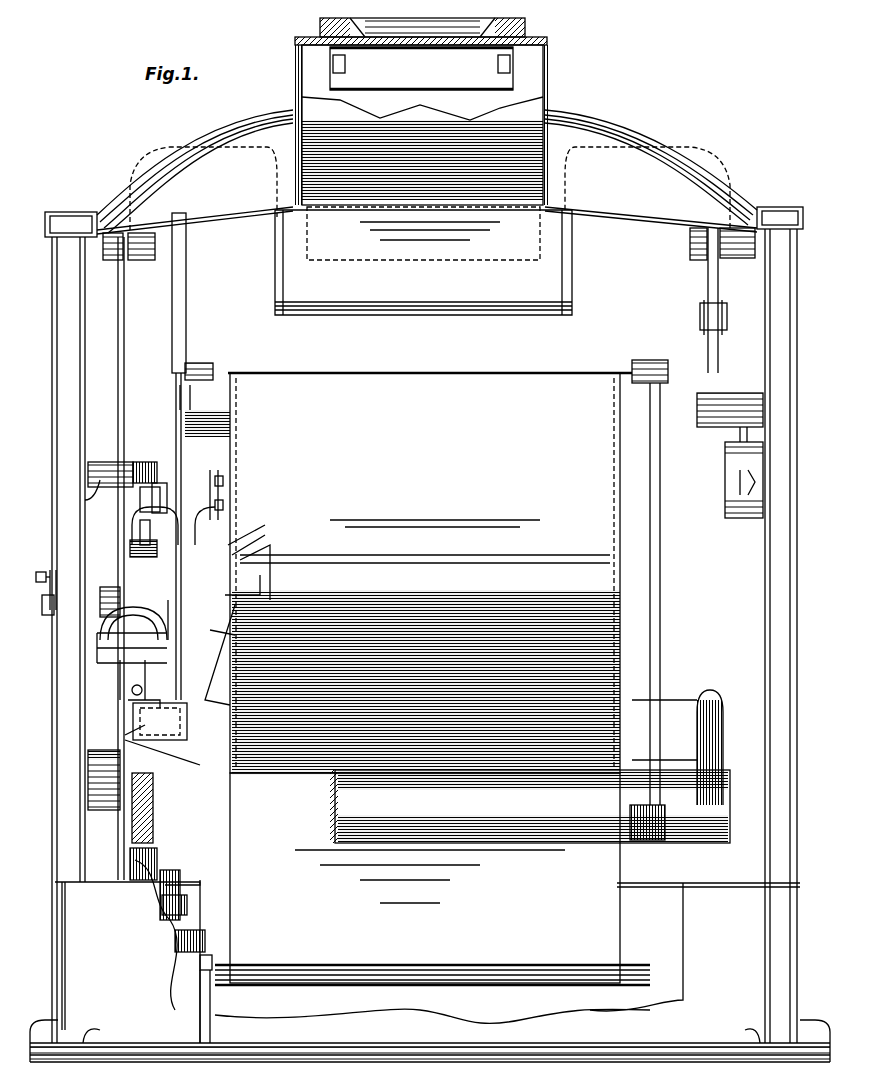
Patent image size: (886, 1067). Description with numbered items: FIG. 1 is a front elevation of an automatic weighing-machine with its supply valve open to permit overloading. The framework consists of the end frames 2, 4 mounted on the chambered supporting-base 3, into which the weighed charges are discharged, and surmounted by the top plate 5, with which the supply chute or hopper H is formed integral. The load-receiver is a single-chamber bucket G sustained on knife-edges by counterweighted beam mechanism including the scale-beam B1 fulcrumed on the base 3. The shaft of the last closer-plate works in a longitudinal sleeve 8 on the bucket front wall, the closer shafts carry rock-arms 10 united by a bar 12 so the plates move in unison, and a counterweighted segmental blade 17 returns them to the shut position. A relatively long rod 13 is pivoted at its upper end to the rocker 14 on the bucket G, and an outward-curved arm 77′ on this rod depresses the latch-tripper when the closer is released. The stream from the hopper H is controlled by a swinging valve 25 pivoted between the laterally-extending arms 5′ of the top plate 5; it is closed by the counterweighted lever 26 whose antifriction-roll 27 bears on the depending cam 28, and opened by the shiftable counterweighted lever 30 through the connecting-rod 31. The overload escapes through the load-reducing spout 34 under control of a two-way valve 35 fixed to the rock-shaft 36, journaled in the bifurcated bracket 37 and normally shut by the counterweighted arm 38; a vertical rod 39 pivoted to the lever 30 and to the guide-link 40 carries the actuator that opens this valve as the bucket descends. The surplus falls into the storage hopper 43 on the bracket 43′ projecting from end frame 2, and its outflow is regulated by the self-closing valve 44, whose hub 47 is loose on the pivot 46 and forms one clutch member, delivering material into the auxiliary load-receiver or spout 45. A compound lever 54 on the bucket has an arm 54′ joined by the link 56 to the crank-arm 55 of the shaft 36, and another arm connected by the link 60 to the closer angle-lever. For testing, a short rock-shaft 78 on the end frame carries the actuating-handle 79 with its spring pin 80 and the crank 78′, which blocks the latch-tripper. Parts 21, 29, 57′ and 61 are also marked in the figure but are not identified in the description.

The end frame 2 is at (108, 360).
The chambered supporting-base 3 is at (430, 972).
The end frame 4 is at (775, 350).
The top plate 5 is at (427, 172).
The laterally-extending arms 5′ is at (135, 245).
The longitudinal sleeve 8 is at (432, 898).
The rock-arms 10 is at (205, 962).
The bar 12 is at (185, 942).
The connecting-rod 13 is at (205, 395).
The rocker 14 is at (178, 398).
The counterweighted segmental blade 17 is at (202, 998).
The motor brush holder 21 is at (468, 88).
The valve 25 is at (383, 308).
The counterweighted lever 26 is at (720, 400).
The antifriction-roll 27 is at (703, 306).
The depending cam 28 is at (708, 270).
The rod 29 is at (186, 300).
The shiftable counterweighted lever 30 is at (100, 772).
The connecting-rod 31 is at (124, 318).
The load-reducing spout 34 is at (260, 566).
The two-way valve 35 is at (235, 585).
The rock-shaft 36 is at (130, 548).
The bifurcated bracket 37 is at (215, 495).
The counterweighted arm 38 is at (140, 530).
The vertically-disposed rod 39 is at (165, 495).
The guide-link 40 is at (135, 470).
The storage hopper 43 is at (205, 655).
The bracket 43′ is at (110, 628).
The auxiliary load-supply valve 44 is at (185, 722).
The auxiliary load-receiver 45 is at (195, 757).
The pivot 46 is at (97, 650).
The hub 47 is at (130, 670).
The compound lever 54 is at (160, 860).
The arm of compound lever 54′ is at (215, 790).
The crank-arm 55 is at (228, 540).
The link 56 is at (170, 605).
The pawl 57′ is at (135, 705).
The link 60 is at (170, 922).
The arm 61 is at (215, 625).
The outward-curved arm 77′ is at (115, 495).
The rock-shaft 78 is at (42, 606).
The crank 78′ is at (110, 590).
The actuating-handle 79 is at (40, 572).
The spring pin 80 is at (58, 575).
The supply chute H is at (548, 87).
The bucket G is at (430, 574).
The counterweighted scale-beam B1 is at (530, 766).